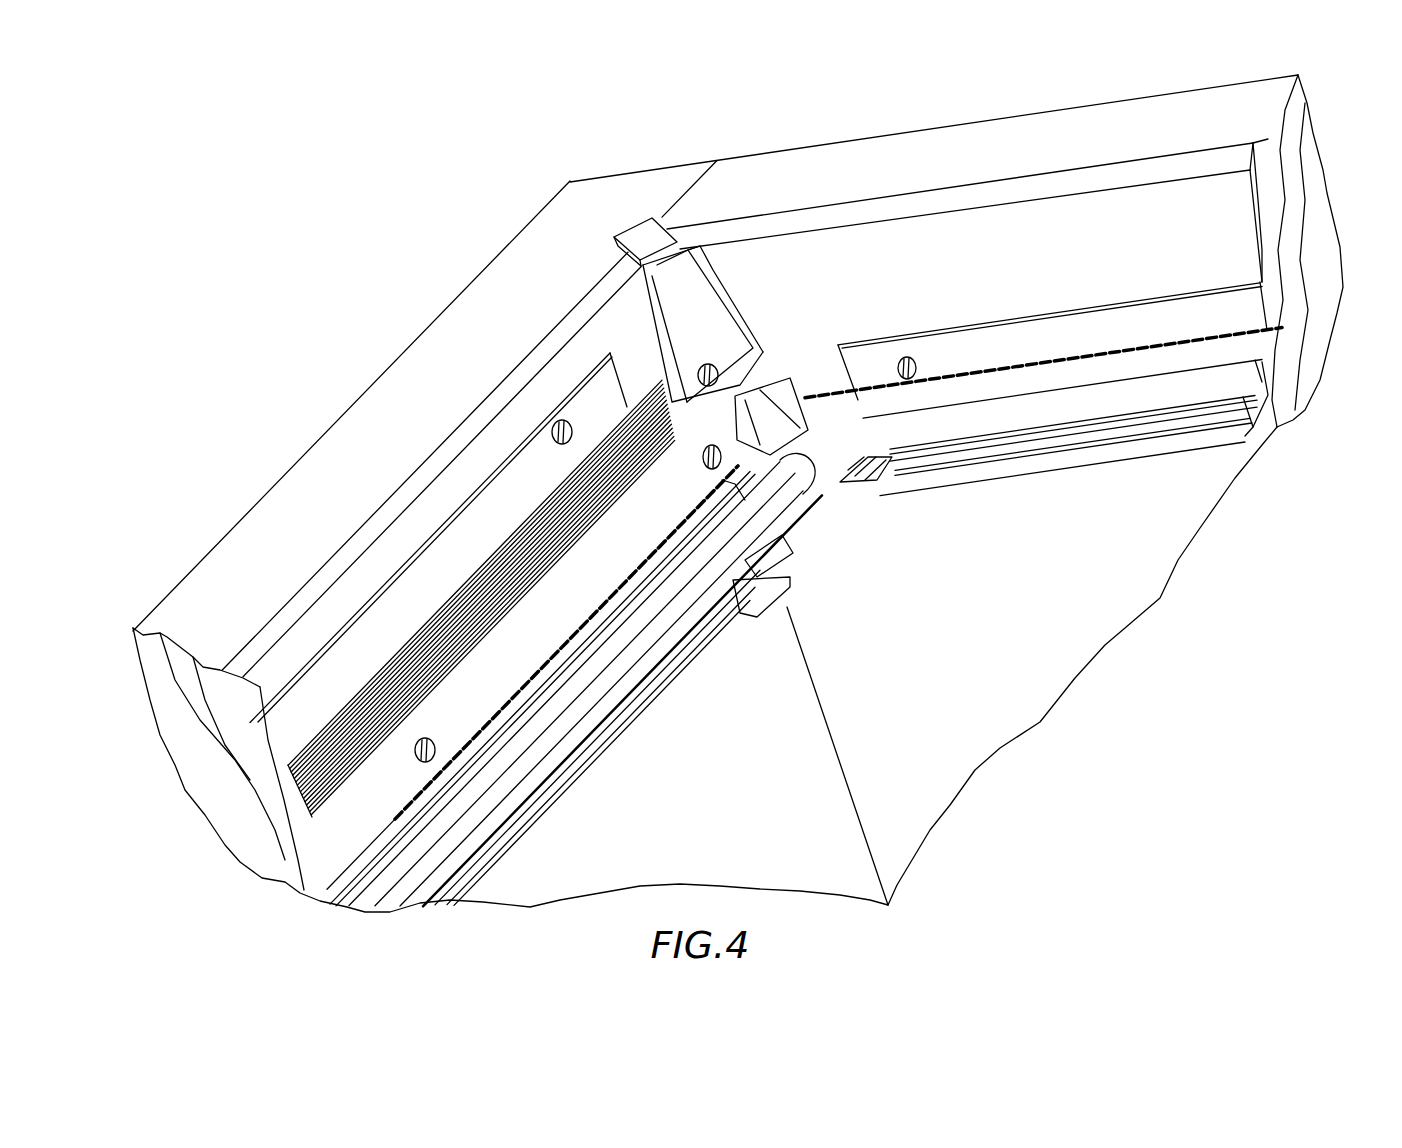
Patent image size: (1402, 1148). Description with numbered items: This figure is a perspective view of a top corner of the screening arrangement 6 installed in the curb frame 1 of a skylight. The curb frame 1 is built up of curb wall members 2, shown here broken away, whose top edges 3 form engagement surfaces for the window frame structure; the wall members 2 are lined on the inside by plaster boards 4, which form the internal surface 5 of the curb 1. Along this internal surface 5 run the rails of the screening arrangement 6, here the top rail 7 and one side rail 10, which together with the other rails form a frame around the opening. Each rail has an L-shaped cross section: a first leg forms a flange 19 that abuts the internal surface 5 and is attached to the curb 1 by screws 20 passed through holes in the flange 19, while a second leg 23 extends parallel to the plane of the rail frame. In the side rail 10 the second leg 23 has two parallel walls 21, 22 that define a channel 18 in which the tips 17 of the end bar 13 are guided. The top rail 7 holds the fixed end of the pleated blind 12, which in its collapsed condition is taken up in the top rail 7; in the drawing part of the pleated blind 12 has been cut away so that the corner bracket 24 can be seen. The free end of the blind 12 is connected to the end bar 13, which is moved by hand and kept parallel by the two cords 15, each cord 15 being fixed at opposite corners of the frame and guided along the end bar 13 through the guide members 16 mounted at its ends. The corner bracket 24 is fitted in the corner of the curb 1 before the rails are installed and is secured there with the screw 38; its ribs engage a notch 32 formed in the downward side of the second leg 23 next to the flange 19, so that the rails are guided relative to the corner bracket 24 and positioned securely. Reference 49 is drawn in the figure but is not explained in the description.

The curb frame 1 is at (528, 214).
The curb wall member 2 is at (376, 381).
The top edge 3 is at (999, 133).
The plaster board 4 is at (1084, 178).
The internal surface 5 is at (1280, 210).
The screening arrangement 6 is at (822, 574).
The top rail 7 is at (358, 647).
The side rail 10 is at (1250, 307).
The pleated blind 12 is at (298, 788).
The end bar 13 is at (643, 627).
The cord 15 is at (560, 649).
The guide member 16 is at (722, 496).
The tip 17 is at (872, 468).
The channel 18 is at (1003, 443).
The flange 19 is at (434, 556).
The screw 20 is at (557, 418).
The wall 21 is at (1243, 400).
The wall 22 is at (1080, 448).
The second leg 23 is at (958, 477).
The corner bracket 24 is at (752, 316).
The notch 32 is at (1270, 375).
The screw 38 is at (707, 362).
The strip 49 is at (862, 418).